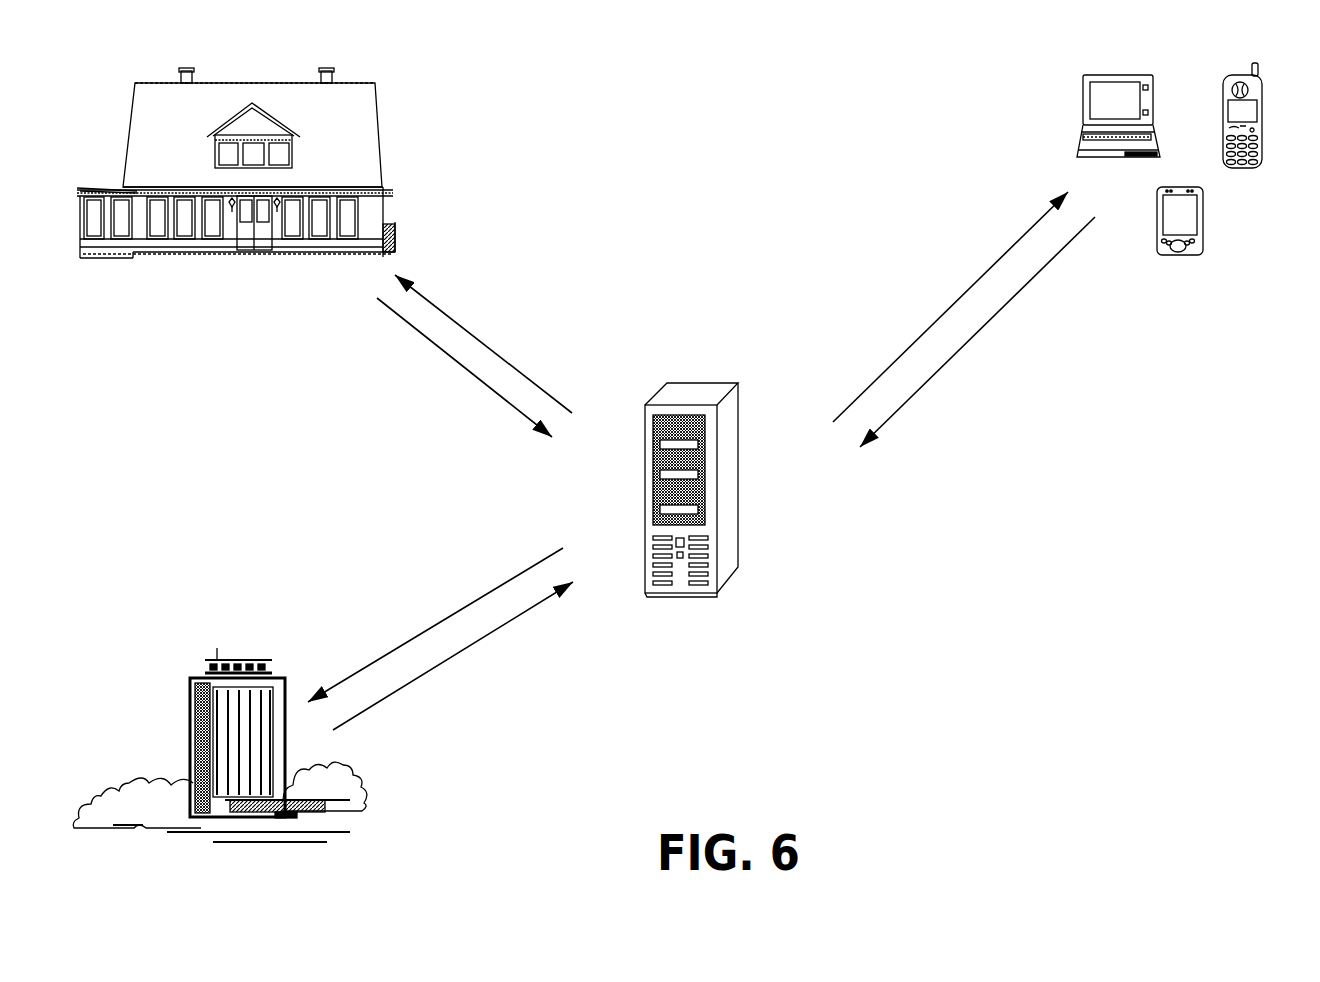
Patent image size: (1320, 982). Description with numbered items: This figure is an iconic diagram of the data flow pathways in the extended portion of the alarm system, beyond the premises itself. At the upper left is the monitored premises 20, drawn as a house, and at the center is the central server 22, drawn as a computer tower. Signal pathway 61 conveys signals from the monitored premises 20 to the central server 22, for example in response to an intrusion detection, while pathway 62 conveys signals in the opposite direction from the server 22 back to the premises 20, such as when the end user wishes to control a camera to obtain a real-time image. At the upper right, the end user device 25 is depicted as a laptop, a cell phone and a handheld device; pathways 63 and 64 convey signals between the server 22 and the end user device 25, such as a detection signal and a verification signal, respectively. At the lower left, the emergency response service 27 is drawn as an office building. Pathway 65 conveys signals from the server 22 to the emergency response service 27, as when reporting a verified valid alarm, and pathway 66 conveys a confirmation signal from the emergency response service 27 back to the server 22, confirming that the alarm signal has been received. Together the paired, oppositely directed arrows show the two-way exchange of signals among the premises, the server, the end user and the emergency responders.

The monitored premises 20 is at (378, 128).
The central server 22 is at (717, 380).
The end user device 25 is at (1203, 200).
The emergency response service 27 is at (190, 678).
The signal pathway 61 is at (422, 338).
The pathway 62 is at (480, 340).
The pathway 63 is at (953, 303).
The pathway 64 is at (1002, 307).
The pathway 65 is at (445, 620).
The pathway 66 is at (440, 662).